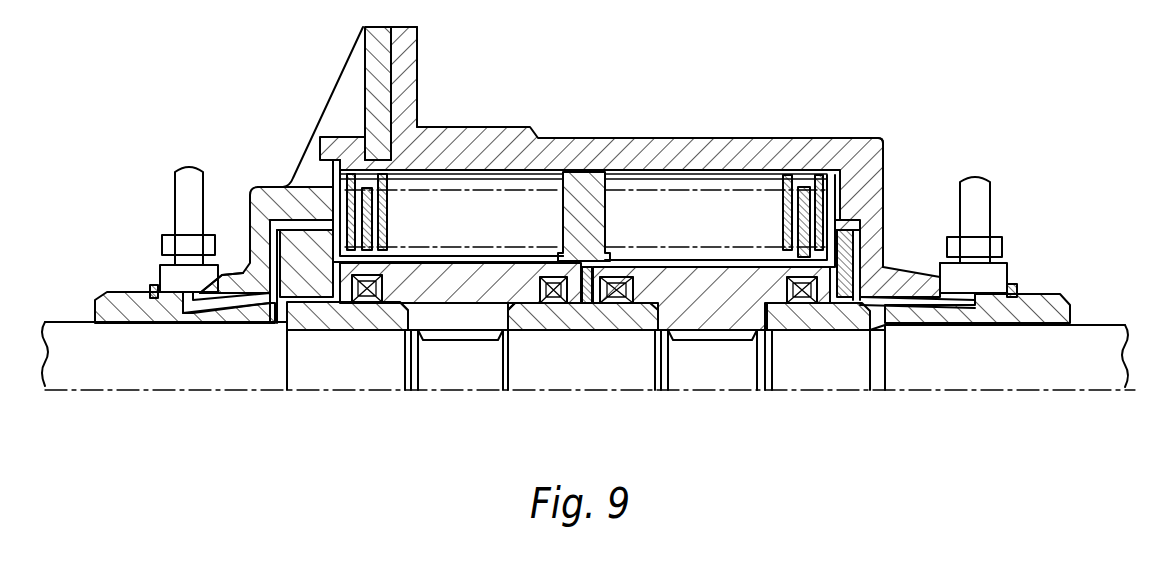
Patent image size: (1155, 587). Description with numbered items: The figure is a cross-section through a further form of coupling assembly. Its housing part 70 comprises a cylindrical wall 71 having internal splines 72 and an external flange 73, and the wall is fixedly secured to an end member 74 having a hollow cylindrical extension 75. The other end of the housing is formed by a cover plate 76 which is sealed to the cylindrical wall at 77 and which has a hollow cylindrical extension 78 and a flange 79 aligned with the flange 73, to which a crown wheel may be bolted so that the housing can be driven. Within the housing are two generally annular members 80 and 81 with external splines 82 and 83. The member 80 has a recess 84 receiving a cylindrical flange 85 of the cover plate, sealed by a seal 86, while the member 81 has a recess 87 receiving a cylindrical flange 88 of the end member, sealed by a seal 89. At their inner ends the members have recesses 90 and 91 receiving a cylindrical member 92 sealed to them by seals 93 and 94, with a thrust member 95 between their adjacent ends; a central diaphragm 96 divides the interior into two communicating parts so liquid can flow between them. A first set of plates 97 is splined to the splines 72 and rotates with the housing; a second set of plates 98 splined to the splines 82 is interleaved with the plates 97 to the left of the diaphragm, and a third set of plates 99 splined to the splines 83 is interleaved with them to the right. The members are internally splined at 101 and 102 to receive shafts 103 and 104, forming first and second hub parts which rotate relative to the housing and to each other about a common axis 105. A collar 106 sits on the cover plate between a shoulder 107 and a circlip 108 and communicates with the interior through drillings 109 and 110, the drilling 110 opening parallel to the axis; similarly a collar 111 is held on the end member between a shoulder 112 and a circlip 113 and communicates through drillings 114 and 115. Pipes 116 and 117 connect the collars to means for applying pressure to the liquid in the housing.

The housing part 70 is at (613, 162).
The cylindrical wall 71 is at (631, 162).
The internal splines 72 is at (647, 179).
The external flange 73 is at (407, 70).
The end member 74 is at (870, 163).
The hollow cylindrical extension 75 is at (1042, 302).
The cover plate 76 is at (266, 213).
The seal location 77 is at (312, 165).
The hollow cylindrical extension 78 is at (110, 300).
The flange 79 is at (373, 75).
The annular member 80 is at (448, 211).
The annular member 81 is at (711, 273).
The external splines 82 is at (518, 257).
The external splines 83 is at (660, 263).
The recess 84 is at (460, 262).
The cylindrical flange 85 is at (387, 320).
The seal 86 is at (363, 308).
The recess 87 is at (772, 300).
The cylindrical flange 88 is at (838, 317).
The seal 89 is at (803, 317).
The recess 90 is at (520, 307).
The recess 91 is at (583, 346).
The cylindrical member 92 is at (567, 310).
The seal 93 is at (525, 288).
The seal 94 is at (637, 289).
The thrust member 95 is at (583, 307).
The central diaphragm 96 is at (582, 197).
The first set of plates 97 is at (352, 200).
The second set of plates 98 is at (368, 228).
The third set of plates 99 is at (800, 200).
The internal splines 101 is at (457, 337).
The internal splines 102 is at (712, 335).
The shaft 103 is at (162, 360).
The shaft 104 is at (1017, 367).
The common axis 105 is at (920, 392).
The collar 106 is at (172, 270).
The shoulder 107 is at (232, 272).
The circlip 108 is at (150, 292).
The drilling 109 is at (247, 305).
The drilling 110 is at (277, 187).
The collar 111 is at (993, 277).
The shoulder 112 is at (940, 280).
The circlip 113 is at (1012, 283).
The drilling 114 is at (920, 305).
The drilling 115 is at (857, 237).
The pipe 116 is at (182, 185).
The pipe 117 is at (980, 198).